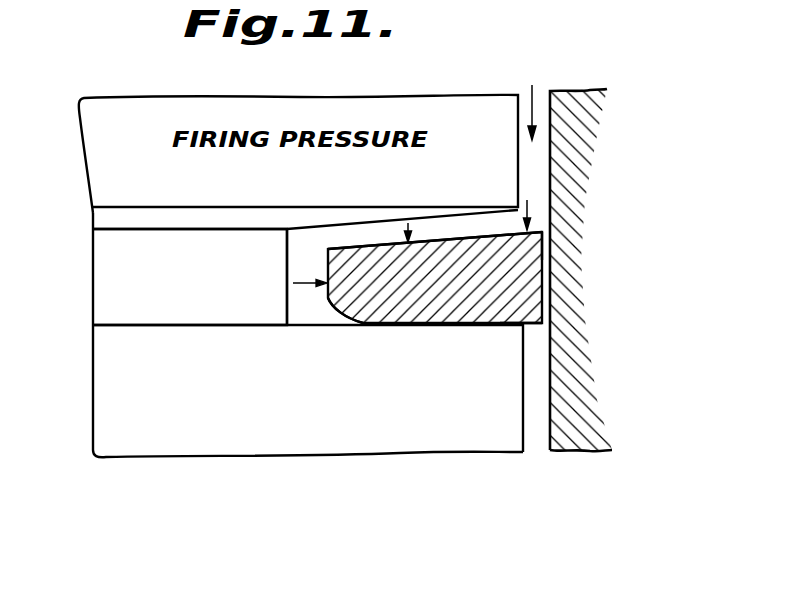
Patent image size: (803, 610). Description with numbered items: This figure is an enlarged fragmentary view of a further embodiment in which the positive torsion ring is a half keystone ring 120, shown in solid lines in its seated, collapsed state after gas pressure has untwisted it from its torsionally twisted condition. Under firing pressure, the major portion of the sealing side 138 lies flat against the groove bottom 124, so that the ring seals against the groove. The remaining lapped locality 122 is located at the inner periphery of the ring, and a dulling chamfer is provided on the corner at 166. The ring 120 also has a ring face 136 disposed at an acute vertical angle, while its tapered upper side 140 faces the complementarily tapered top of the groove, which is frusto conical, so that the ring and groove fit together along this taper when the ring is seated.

The half keystone ring 120 is at (532, 288).
The lapped locality 122 is at (347, 320).
The groove bottom 124 is at (240, 270).
The ring face 136 is at (545, 243).
The sealing side 138 is at (532, 325).
The tapered upper side 140 is at (438, 253).
The dulling chamfer 166 is at (326, 306).